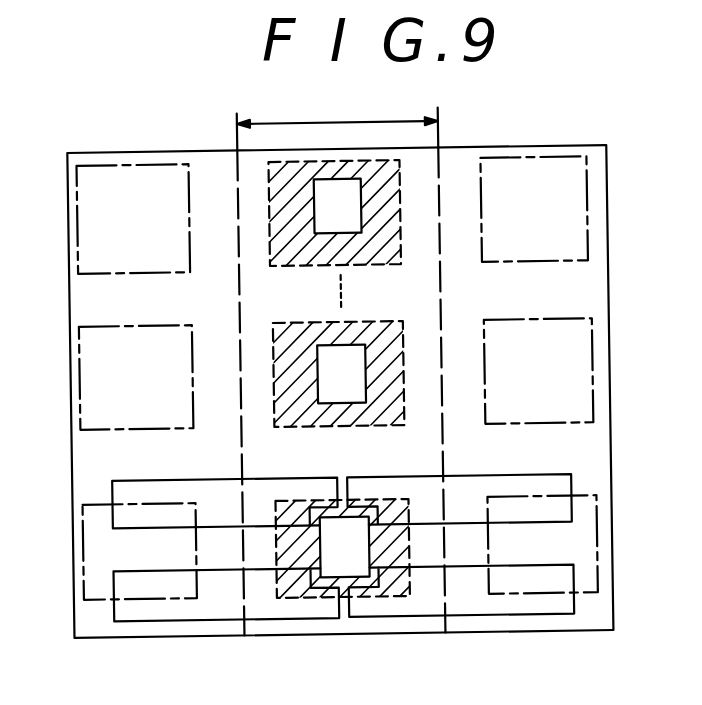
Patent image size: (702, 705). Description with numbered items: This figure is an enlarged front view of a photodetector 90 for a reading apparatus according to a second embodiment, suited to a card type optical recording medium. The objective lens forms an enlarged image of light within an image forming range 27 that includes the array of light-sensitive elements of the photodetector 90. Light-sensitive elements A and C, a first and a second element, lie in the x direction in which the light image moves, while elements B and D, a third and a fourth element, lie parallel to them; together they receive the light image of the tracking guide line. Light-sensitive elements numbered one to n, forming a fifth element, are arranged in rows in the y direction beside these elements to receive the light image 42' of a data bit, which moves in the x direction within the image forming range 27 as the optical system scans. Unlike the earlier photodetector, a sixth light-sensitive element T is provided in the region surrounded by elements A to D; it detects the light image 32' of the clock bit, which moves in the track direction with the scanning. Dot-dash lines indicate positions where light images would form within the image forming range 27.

The image forming range 27 is at (350, 121).
The photodetector 90 is at (559, 149).
The light image of the data bit 42' is at (352, 313).
The light image of the clock bit 32' is at (343, 526).